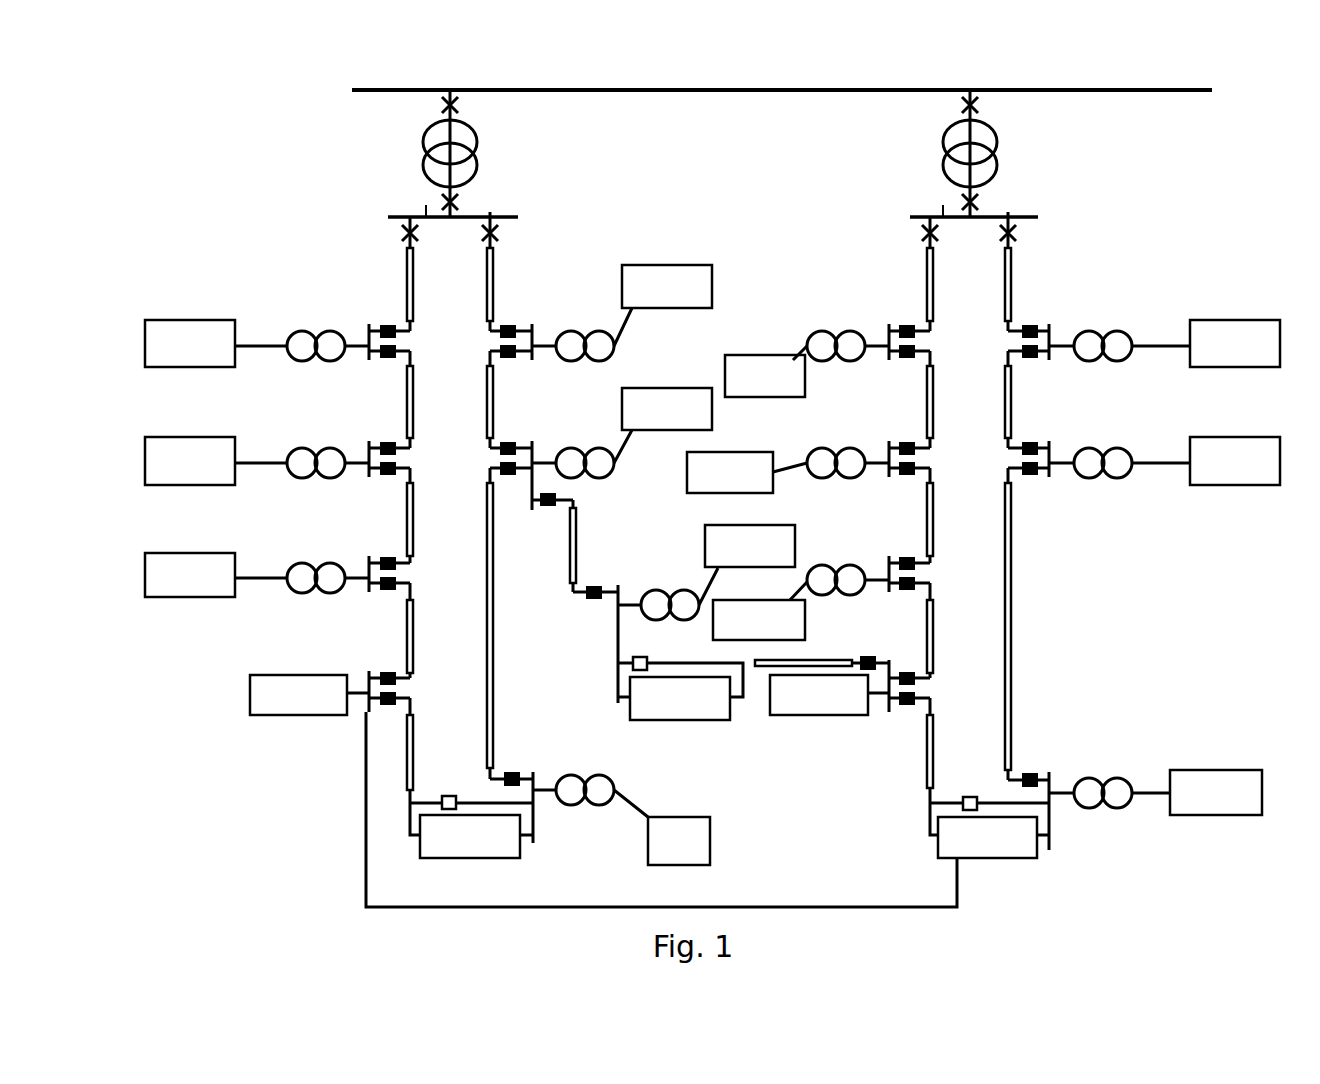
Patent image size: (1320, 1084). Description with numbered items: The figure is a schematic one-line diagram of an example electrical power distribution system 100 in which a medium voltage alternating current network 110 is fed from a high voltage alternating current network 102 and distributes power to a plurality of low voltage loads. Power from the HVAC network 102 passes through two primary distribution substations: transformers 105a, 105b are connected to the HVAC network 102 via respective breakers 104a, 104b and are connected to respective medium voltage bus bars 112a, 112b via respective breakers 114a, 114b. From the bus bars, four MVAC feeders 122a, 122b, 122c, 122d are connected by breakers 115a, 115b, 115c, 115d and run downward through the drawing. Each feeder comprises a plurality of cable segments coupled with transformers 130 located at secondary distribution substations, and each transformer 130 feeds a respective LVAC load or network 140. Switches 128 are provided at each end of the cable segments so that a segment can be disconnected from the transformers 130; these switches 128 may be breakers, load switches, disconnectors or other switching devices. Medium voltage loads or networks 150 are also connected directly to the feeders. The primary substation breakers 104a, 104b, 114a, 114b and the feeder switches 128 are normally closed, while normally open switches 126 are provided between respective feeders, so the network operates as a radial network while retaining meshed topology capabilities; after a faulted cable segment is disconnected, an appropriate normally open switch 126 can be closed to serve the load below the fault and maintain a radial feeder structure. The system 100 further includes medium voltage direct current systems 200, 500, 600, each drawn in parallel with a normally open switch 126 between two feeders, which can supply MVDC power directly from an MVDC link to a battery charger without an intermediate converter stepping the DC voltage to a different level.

The electrical power distribution system 100 is at (242, 100).
The high voltage alternating current network 102 is at (637, 88).
The breaker 104a is at (460, 106).
The breaker 104b is at (980, 106).
The transformer 105a is at (425, 156).
The transformer 105b is at (945, 156).
The medium voltage alternating current network 110 is at (335, 220).
The medium voltage bus bar 112a is at (426, 205).
The medium voltage bus bar 112b is at (943, 205).
The breaker 114a is at (460, 203).
The breaker 114b is at (980, 203).
The breaker 115a is at (400, 236).
The breaker 115b is at (498, 238).
The breaker 115c is at (920, 238).
The breaker 115d is at (1016, 238).
The MVAC feeder 122a is at (390, 276).
The MVAC feeder 122b is at (508, 283).
The MVAC feeder 122c is at (912, 276).
The MVAC feeder 122d is at (1030, 283).
The normally open switch 126 is at (698, 717).
The switch 128 is at (684, 577).
The transformer 130 is at (712, 584).
The low voltage alternating current load or network 140 is at (698, 539).
The medium voltage load or network 150 is at (569, 731).
The medium voltage direct current system 200 is at (478, 858).
The medium voltage direct current system 500 is at (683, 720).
The medium voltage direct current system 600 is at (988, 858).